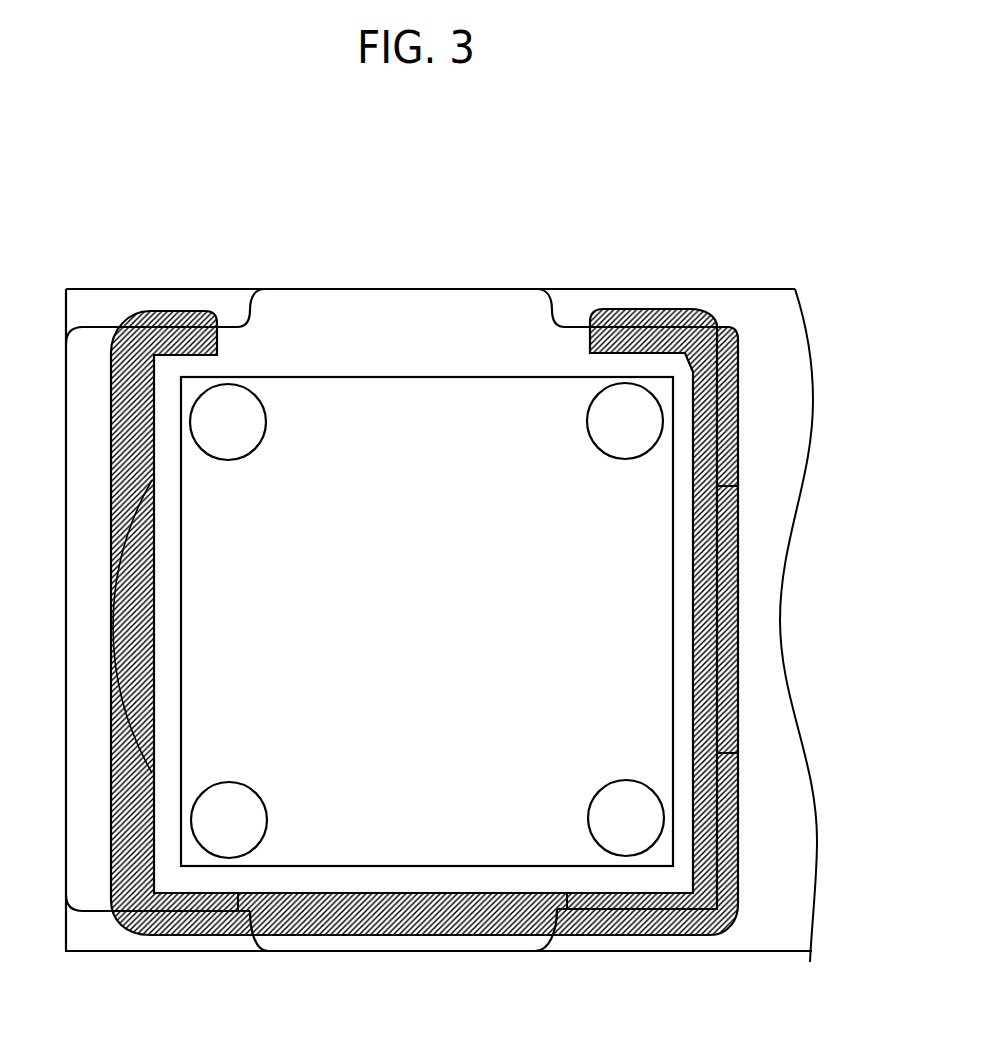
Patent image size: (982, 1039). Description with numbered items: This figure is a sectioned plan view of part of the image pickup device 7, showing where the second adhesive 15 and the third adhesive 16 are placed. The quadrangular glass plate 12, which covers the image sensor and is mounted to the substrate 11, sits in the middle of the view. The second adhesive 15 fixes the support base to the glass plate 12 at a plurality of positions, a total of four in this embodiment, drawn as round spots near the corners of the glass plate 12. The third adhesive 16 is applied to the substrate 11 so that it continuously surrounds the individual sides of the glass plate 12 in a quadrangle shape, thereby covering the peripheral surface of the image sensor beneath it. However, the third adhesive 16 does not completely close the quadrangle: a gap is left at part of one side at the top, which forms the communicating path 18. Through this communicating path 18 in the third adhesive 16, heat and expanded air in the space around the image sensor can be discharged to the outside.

The image pickup device 7 is at (620, 212).
The substrate 11 is at (733, 289).
The glass plate 12 is at (403, 377).
The second adhesive 15 is at (230, 438).
The third adhesive 16 is at (166, 312).
The communicating path 18 is at (227, 342).